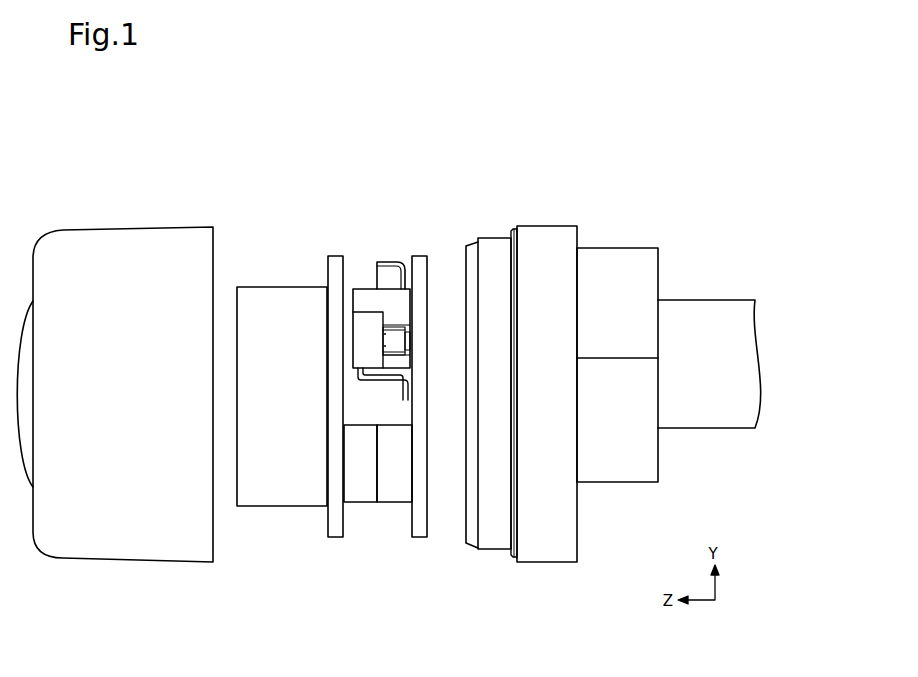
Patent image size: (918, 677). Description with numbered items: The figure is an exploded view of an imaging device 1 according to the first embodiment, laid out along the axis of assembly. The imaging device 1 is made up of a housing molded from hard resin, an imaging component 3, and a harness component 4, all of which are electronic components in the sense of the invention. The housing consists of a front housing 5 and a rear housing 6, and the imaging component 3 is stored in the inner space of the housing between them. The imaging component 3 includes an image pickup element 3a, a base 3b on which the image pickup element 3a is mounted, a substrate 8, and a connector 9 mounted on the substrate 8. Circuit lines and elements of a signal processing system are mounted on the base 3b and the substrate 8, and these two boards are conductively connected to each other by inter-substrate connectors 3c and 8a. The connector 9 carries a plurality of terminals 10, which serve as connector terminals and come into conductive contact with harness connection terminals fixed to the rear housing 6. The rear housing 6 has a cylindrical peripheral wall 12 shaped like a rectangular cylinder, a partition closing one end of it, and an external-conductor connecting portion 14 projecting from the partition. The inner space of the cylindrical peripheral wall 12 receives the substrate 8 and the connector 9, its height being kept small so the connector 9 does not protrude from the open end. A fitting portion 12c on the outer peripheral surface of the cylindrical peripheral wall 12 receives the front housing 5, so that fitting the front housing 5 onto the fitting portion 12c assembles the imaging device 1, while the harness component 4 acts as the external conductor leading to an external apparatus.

The imaging device 1 is at (472, 152).
The imaging component 3 is at (372, 198).
The image pickup element 3a is at (282, 506).
The base 3b is at (337, 538).
The inter-substrate connector 3c is at (360, 502).
The harness component 4 is at (716, 300).
The front housing 5 is at (121, 228).
The rear housing 6 is at (546, 226).
The substrate 8 is at (418, 538).
The inter-substrate connector 8a is at (392, 502).
The connector 9 is at (386, 260).
The terminal 10 is at (383, 381).
The cylindrical peripheral wall 12 is at (545, 563).
The fitting portion 12c is at (497, 549).
The external-conductor connecting portion 14 is at (620, 248).